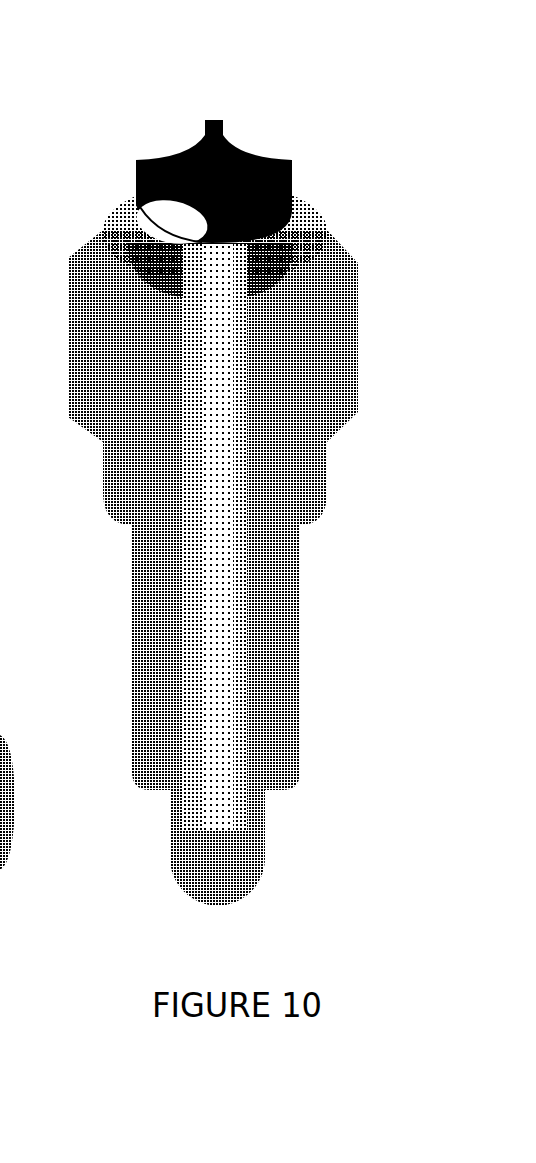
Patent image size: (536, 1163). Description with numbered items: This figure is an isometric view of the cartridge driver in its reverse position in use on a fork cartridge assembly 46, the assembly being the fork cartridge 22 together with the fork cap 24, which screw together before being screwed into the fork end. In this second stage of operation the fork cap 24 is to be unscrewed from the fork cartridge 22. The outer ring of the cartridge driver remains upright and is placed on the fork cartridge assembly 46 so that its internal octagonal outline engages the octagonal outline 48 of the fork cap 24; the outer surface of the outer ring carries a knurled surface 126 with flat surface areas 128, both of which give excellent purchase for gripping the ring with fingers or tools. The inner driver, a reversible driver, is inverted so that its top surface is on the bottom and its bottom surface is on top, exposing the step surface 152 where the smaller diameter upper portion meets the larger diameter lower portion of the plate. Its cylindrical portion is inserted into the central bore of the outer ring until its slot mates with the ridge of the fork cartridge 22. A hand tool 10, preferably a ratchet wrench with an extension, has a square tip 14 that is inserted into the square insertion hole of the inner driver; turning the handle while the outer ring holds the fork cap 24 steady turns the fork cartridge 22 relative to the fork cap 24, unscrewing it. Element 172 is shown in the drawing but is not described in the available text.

The hand tool 10 is at (175, 802).
The square tip 14 is at (148, 381).
The fork cartridge 22 is at (290, 585).
The fork cap 24 is at (253, 328).
The fork cartridge assembly 46 is at (355, 493).
The octagonal outline 48 is at (323, 350).
The knurled surface 126 is at (253, 328).
The flat surface areas 128 is at (353, 367).
The step surface 152 is at (148, 408).
The head portion 172 is at (63, 258).